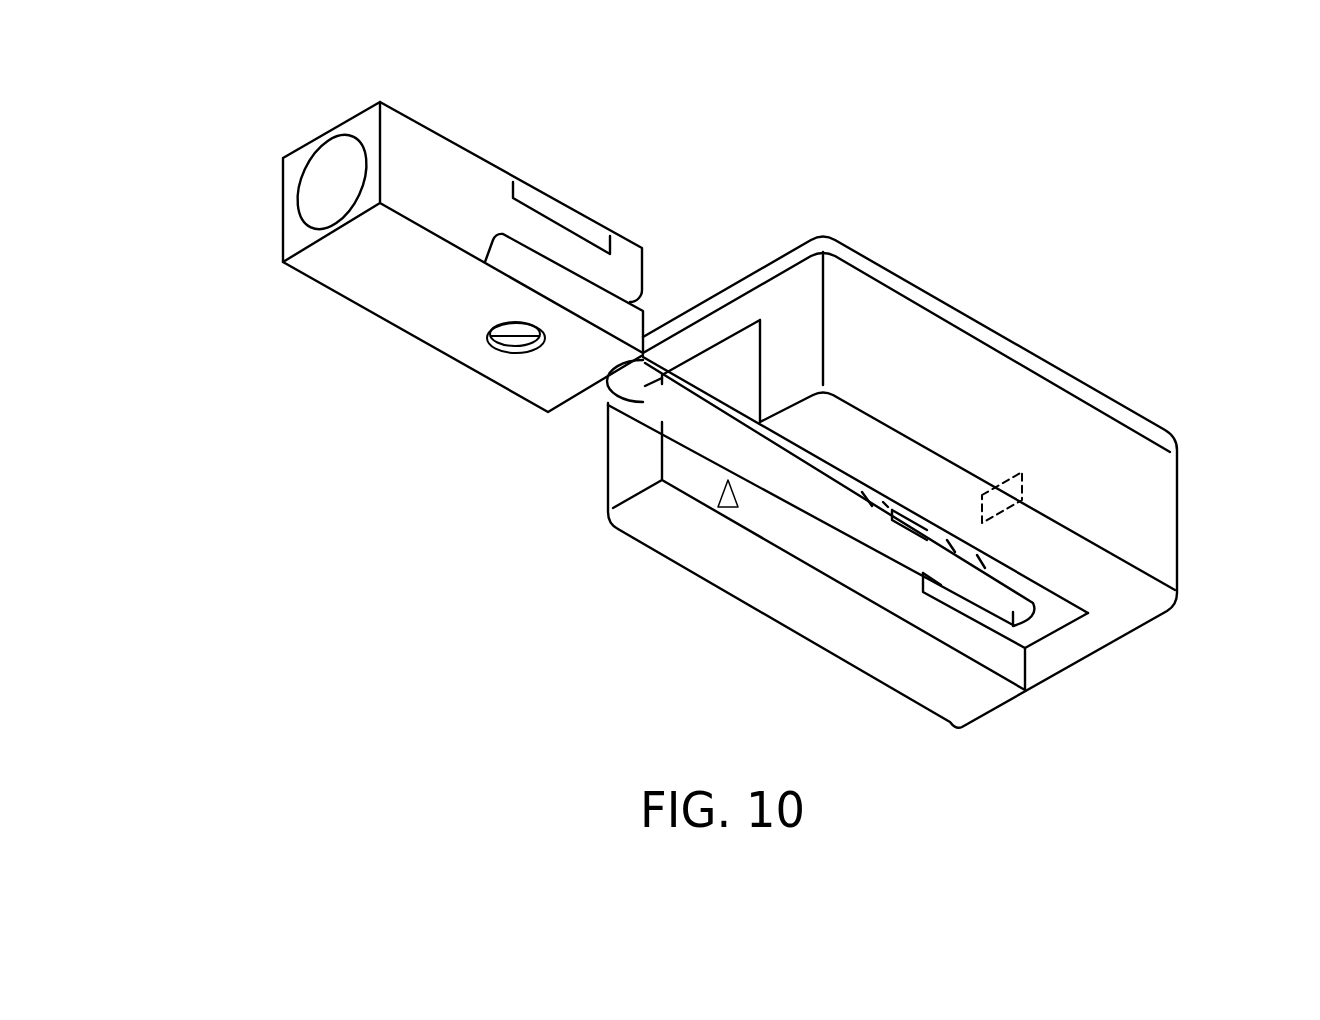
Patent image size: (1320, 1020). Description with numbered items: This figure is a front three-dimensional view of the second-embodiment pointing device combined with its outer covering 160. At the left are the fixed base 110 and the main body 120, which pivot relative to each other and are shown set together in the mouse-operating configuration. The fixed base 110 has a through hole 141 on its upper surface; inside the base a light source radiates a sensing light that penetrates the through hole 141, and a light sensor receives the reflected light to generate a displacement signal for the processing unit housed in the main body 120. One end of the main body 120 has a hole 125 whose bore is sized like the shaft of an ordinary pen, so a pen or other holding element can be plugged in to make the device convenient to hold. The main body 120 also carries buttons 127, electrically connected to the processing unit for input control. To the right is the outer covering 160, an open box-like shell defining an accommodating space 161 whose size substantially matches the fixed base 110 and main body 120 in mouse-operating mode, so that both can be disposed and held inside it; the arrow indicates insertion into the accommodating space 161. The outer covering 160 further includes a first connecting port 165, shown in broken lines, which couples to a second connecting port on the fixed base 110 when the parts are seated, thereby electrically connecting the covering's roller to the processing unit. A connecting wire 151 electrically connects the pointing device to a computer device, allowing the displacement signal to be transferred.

The fixed base 110 is at (437, 320).
The main body 120 is at (357, 275).
The hole 125 is at (327, 172).
The buttons 127 is at (553, 212).
The through hole 141 is at (512, 338).
The connecting wire 151 is at (1053, 633).
The outer covering 160 is at (937, 353).
The accommodating space 161 is at (728, 507).
The first connecting port 165 is at (1024, 486).